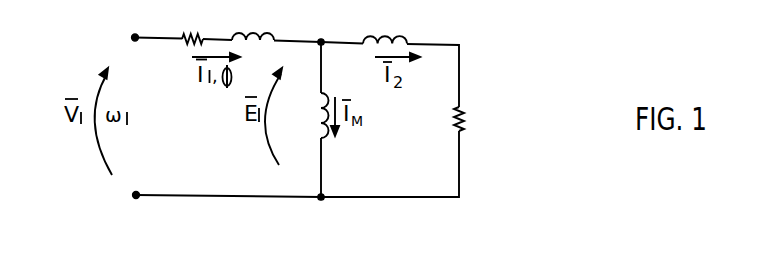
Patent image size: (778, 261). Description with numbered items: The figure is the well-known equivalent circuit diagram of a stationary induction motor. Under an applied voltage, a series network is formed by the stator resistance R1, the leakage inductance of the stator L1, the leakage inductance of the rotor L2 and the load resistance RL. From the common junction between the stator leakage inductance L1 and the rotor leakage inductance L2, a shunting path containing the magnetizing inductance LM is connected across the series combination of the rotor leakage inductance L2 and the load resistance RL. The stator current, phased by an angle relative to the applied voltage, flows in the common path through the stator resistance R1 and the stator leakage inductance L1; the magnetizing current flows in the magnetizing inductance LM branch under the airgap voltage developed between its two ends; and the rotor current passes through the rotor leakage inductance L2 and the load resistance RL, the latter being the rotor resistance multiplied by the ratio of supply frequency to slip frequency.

The stator resistance R1 is at (210, 20).
The leakage inductance of the stator L1 is at (290, 20).
The leakage inductance of the rotor L2 is at (390, 37).
The magnetizing inductance LM is at (320, 111).
The load resistance RL is at (558, 113).